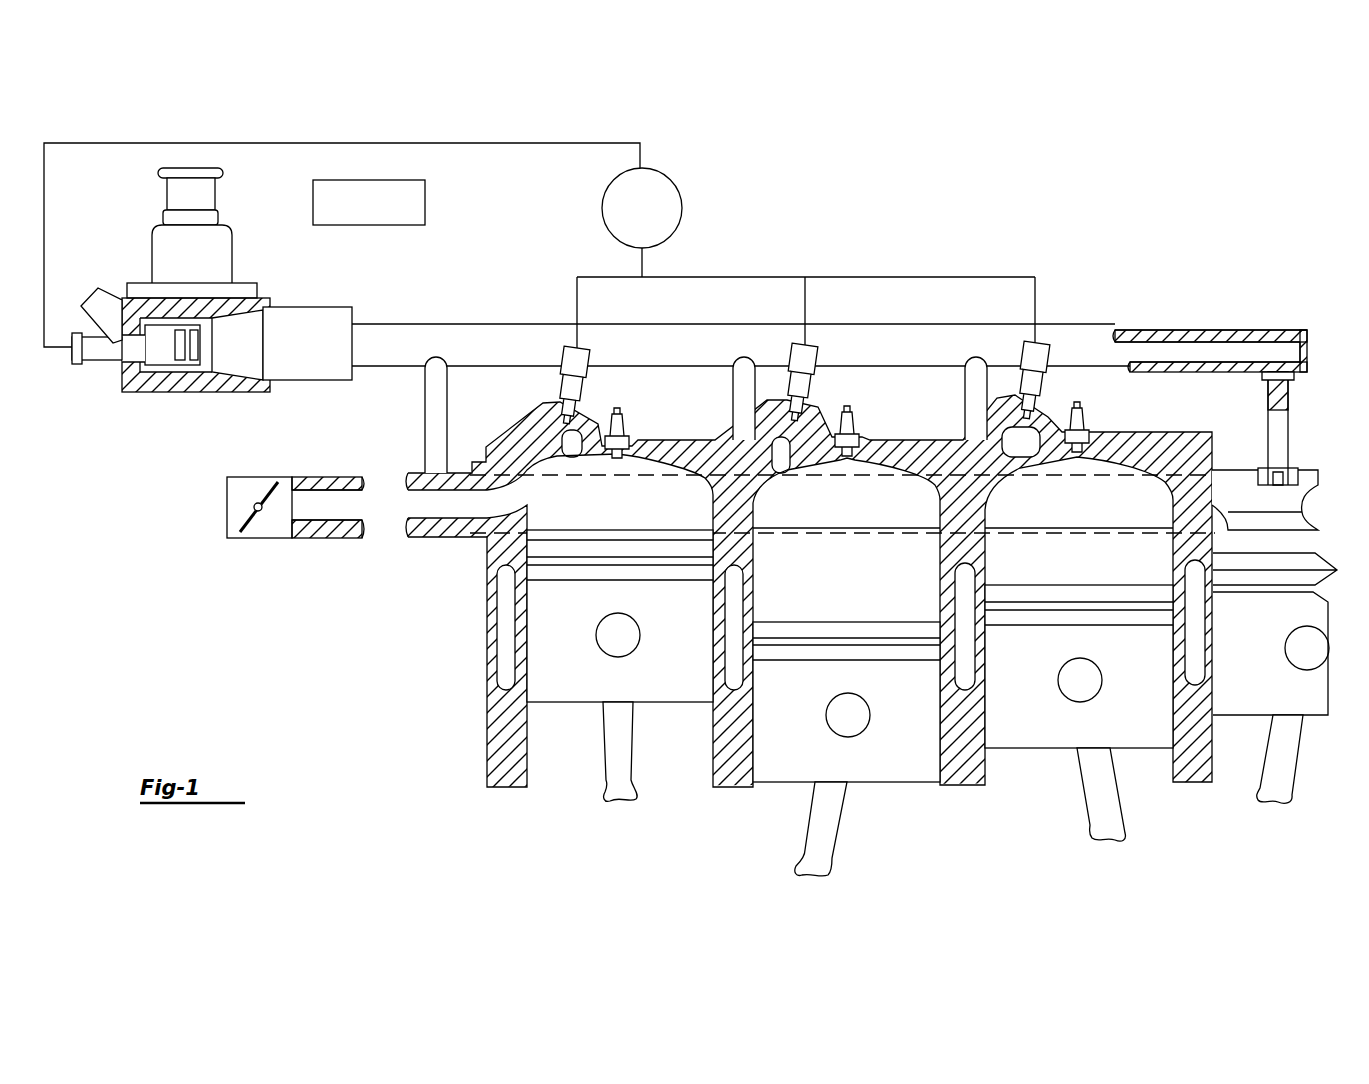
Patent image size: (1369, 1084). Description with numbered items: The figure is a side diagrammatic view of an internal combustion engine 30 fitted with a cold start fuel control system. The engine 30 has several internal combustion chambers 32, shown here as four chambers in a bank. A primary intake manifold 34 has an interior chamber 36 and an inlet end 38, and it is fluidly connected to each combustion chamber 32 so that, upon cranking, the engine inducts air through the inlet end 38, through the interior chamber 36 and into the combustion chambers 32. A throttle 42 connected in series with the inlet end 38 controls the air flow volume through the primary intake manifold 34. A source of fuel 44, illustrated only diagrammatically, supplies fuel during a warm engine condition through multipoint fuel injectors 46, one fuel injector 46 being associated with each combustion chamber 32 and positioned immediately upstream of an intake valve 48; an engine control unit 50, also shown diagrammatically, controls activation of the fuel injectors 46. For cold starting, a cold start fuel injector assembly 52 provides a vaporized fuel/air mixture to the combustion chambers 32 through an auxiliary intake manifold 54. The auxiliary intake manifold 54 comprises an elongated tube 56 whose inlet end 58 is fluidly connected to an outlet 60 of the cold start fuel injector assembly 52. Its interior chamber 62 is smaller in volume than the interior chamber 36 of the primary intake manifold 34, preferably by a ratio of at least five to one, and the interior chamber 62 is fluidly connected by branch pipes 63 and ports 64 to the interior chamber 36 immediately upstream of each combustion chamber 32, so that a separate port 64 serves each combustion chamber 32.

The internal combustion engine 30 is at (422, 657).
The internal combustion chamber 32 is at (636, 516).
The primary intake manifold 34 is at (437, 540).
The interior chamber 36 is at (413, 508).
The inlet end 38 is at (287, 525).
The throttle 42 is at (243, 515).
The source of fuel 44 is at (678, 192).
The multipoint fuel injector 46 is at (790, 345).
The intake valve 48 is at (847, 428).
The engine control unit 50 is at (425, 200).
The cold start fuel injector assembly 52 is at (245, 280).
The auxiliary intake manifold 54 is at (1174, 332).
The elongated tube 56 is at (1254, 330).
The inlet end 58 is at (337, 373).
The outlet 60 is at (397, 281).
The interior chamber 62 is at (1275, 350).
The branch pipe 63 is at (1290, 430).
The port 64 is at (1280, 470).